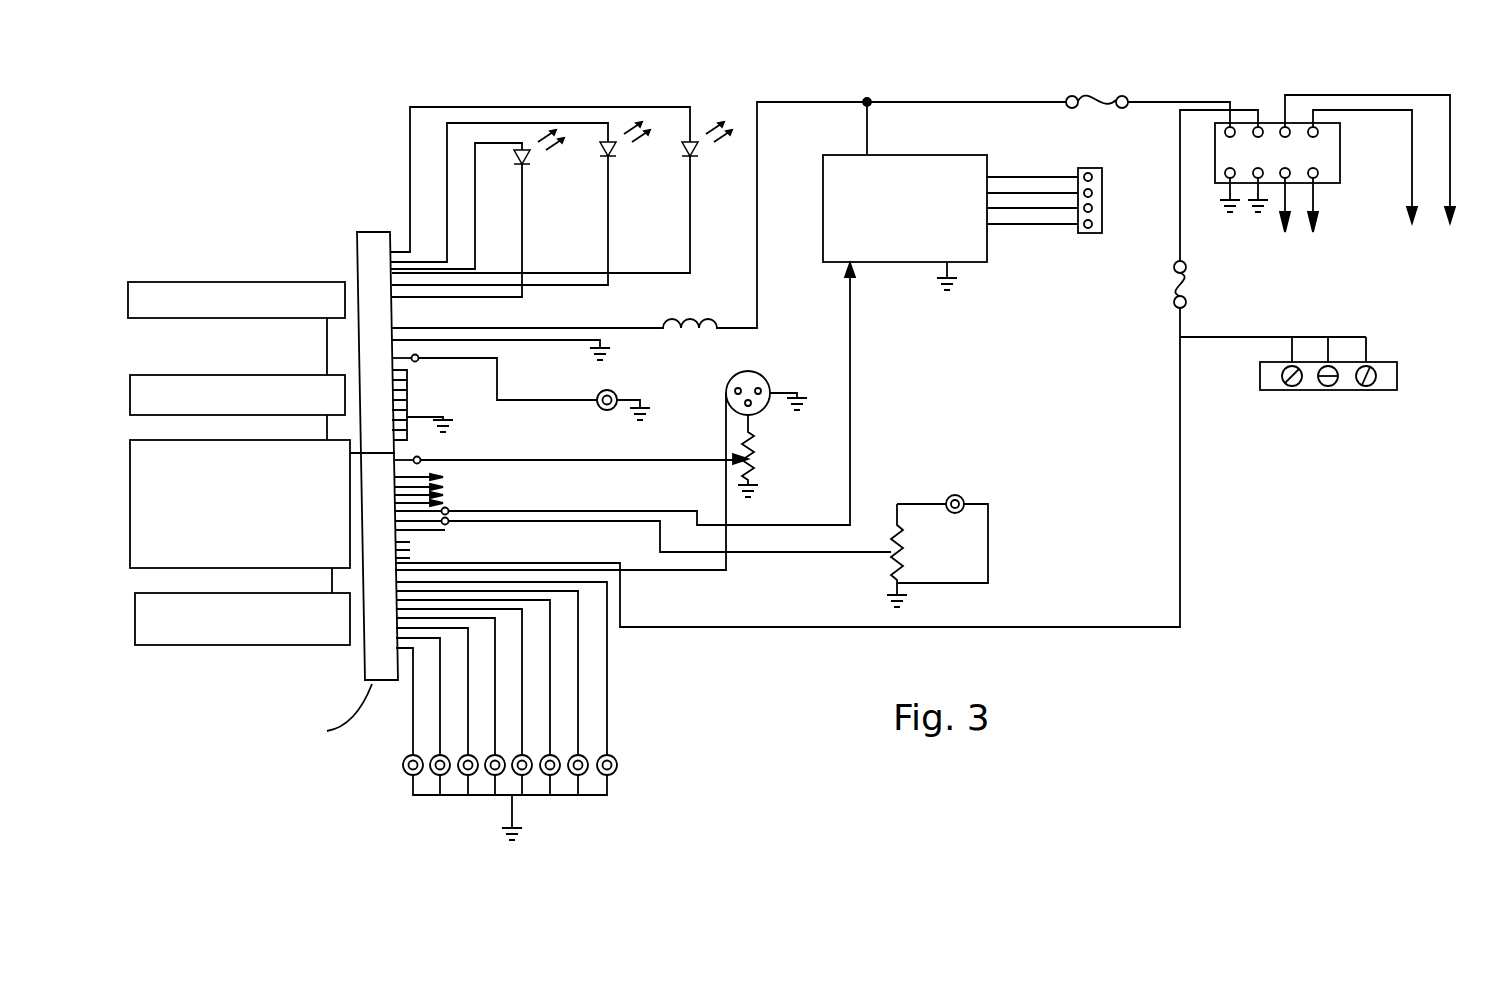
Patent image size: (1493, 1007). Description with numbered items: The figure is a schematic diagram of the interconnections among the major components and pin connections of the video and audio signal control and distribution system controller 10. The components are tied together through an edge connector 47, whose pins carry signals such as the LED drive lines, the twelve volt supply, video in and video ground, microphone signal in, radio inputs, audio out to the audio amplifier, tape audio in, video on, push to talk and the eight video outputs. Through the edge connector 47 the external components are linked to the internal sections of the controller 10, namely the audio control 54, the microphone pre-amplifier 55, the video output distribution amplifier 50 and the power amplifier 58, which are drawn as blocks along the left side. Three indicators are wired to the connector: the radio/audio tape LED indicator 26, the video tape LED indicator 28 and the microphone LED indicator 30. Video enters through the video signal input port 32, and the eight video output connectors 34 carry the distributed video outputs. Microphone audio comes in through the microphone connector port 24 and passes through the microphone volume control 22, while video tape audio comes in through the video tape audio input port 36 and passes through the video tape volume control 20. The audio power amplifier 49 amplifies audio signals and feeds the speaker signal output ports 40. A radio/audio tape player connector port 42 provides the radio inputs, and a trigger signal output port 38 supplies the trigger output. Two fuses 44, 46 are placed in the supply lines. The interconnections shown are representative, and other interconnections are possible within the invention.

The video and audio signal control and distribution system controller 10 is at (274, 120).
The edge connector 47 is at (371, 232).
The audio control 54 is at (243, 318).
The microphone pre-amplifier 55 is at (213, 375).
The video output distribution amplifier 50 is at (130, 512).
The power amplifier 58 is at (263, 645).
The radio/audio tape LED indicator 26 is at (526, 165).
The video tape LED indicator 28 is at (612, 158).
The microphone LED indicator 30 is at (694, 158).
The video signal input port 32 is at (615, 391).
The microphone connector port 24 is at (766, 377).
The microphone volume control 22 is at (755, 455).
The video tape volume control 20 is at (891, 568).
The video tape audio input port 36 is at (960, 495).
The video output connectors 34 is at (619, 764).
The audio power amplifier 49 is at (955, 155).
The speaker signal output ports 40 is at (1103, 180).
The fuse 46 is at (1095, 96).
The radio/audio tape player connector port 42 is at (1274, 122).
The fuse 44 is at (1174, 286).
The trigger signal output port 38 is at (1380, 362).